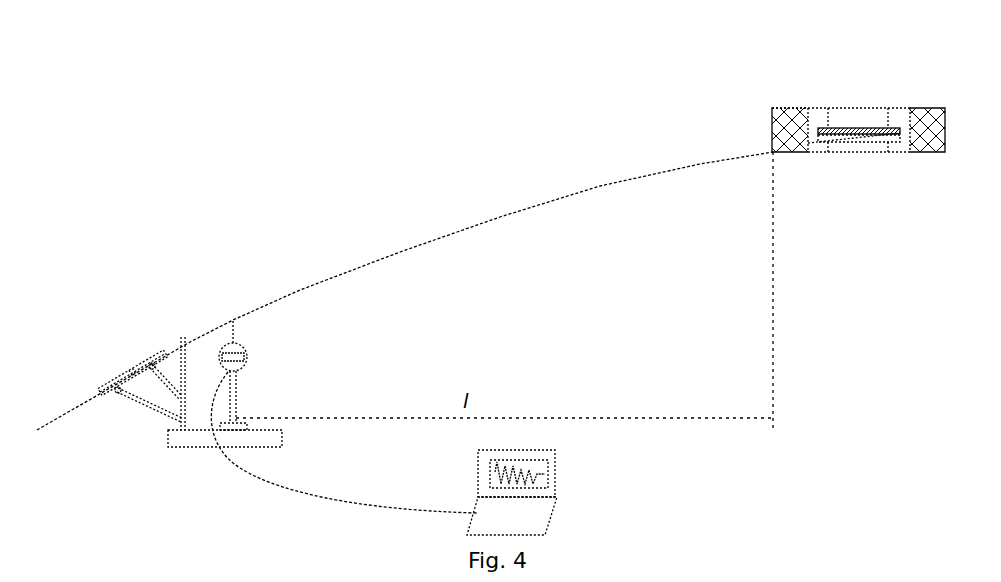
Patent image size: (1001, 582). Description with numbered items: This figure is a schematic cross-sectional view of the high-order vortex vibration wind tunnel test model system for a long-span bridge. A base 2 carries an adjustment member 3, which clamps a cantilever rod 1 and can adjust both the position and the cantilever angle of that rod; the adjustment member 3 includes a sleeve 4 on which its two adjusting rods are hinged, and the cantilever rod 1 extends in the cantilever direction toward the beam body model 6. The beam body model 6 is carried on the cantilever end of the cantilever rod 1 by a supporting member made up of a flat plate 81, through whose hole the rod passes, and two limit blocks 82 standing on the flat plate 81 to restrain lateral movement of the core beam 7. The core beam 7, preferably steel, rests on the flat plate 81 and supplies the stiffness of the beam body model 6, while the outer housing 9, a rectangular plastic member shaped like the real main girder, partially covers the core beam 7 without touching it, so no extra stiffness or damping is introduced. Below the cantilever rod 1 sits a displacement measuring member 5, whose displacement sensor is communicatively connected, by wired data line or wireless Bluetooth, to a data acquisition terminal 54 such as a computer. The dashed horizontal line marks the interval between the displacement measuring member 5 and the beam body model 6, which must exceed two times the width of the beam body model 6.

The cantilever rod 1 is at (667, 170).
The base 2 is at (193, 450).
The adjustment member 3 is at (138, 403).
The sleeve 4 is at (123, 382).
The displacement measuring member 5 is at (248, 350).
The beam body model 6 is at (848, 70).
The core beam 7 is at (860, 128).
The outer housing 9 is at (902, 107).
The flat plate 81 is at (897, 145).
The limit block 82 is at (820, 128).
The data acquisition terminal 54 is at (558, 472).